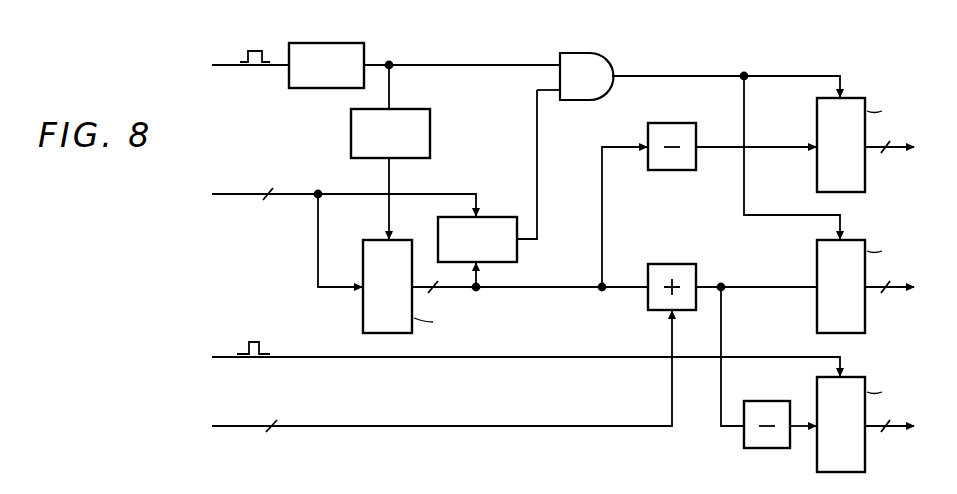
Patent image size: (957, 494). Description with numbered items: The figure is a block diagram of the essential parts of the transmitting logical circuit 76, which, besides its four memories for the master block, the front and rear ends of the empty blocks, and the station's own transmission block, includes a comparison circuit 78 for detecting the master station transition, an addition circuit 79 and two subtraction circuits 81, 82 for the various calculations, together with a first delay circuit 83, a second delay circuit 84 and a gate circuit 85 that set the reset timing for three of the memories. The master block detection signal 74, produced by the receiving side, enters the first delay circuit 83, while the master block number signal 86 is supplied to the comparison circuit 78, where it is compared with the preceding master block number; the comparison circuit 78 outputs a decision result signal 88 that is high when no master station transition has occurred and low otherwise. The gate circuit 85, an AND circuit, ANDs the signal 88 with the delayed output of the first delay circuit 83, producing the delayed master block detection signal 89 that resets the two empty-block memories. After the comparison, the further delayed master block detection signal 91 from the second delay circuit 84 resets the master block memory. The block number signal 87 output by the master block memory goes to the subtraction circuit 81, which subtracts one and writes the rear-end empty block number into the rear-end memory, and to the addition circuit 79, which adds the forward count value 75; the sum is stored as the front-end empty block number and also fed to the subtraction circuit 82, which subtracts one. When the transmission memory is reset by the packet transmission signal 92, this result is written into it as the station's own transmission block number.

The master block detection signal 74 is at (233, 66).
The forward count value 75 is at (318, 426).
The transmitting logical circuit 76 is at (775, 51).
The comparison circuit 78 is at (503, 217).
The addition circuit 79 is at (684, 264).
The subtraction circuit 81 is at (683, 123).
The subtraction circuit 82 is at (760, 401).
The first delay circuit 83 is at (364, 51).
The second delay circuit 84 is at (430, 121).
The gate circuit 85 is at (601, 53).
The master block number signal 86 is at (247, 194).
The block number signal 87 is at (519, 290).
The decision result signal 88 is at (539, 176).
The master block detection signal 89 is at (450, 64).
The master block detection signal 91 is at (392, 176).
The packet transmission signal 92 is at (305, 357).